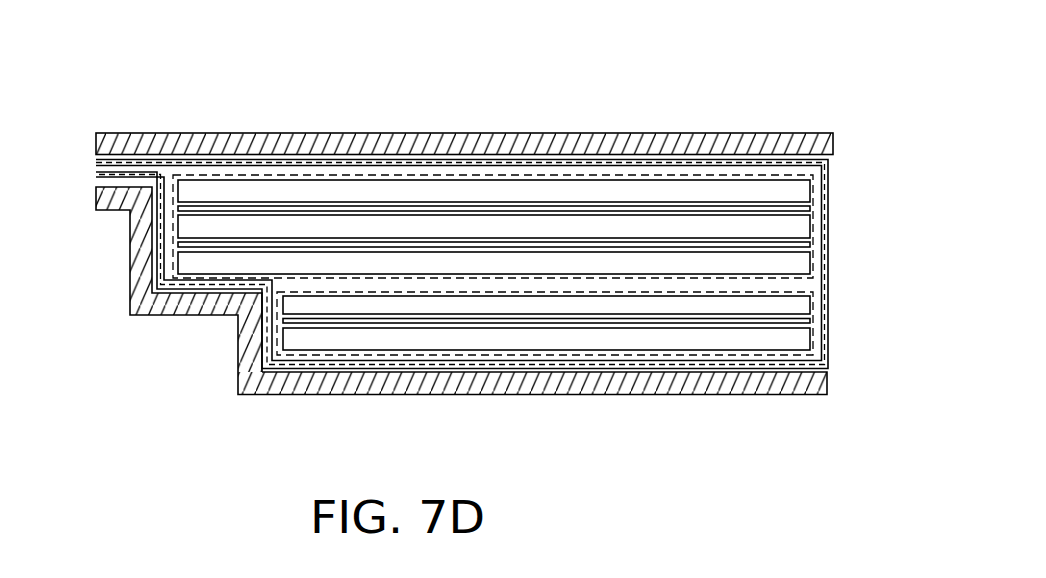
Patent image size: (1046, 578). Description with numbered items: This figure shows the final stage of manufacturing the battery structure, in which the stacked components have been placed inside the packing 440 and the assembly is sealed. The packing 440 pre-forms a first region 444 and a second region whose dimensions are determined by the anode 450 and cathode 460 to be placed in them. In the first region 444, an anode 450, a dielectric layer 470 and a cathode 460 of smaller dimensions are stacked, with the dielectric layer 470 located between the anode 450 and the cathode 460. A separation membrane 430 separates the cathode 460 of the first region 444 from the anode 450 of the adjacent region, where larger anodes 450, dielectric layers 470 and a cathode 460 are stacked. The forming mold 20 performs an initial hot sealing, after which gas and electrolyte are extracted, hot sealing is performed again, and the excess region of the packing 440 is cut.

The forming mold 20 is at (826, 144).
The separation membrane 430 is at (244, 318).
The packing 440 is at (827, 192).
The first region 444 is at (810, 342).
The anode 450 is at (183, 192).
The cathode 460 is at (183, 230).
The dielectric layer 470 is at (810, 320).